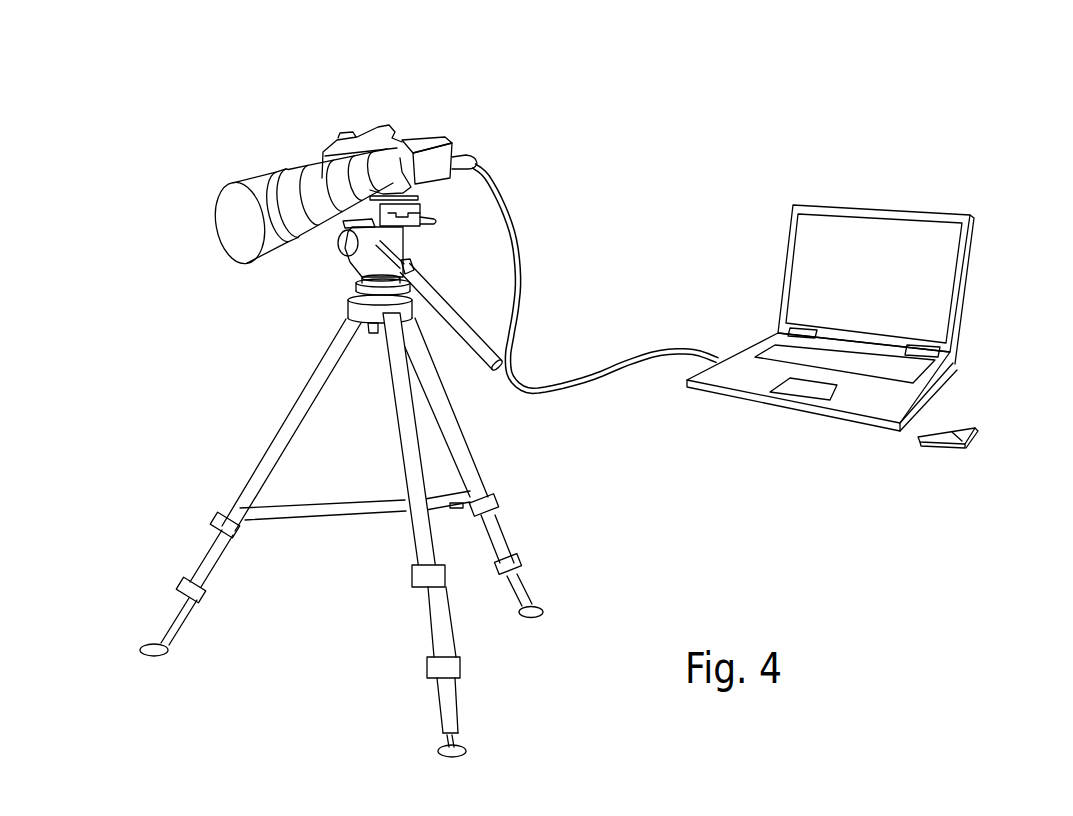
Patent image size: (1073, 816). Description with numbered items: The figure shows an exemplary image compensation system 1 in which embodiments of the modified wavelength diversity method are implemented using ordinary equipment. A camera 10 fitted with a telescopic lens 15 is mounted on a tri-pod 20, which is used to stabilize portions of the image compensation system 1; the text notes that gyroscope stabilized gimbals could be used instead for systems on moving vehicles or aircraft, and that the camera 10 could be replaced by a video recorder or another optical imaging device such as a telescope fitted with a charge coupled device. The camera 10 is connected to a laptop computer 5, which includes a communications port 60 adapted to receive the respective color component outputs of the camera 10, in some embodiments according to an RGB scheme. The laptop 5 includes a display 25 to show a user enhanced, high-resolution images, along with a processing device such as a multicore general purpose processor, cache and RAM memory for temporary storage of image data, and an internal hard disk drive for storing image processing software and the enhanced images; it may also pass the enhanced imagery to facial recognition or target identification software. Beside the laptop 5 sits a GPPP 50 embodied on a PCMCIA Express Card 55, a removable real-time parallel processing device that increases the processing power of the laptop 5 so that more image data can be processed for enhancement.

The image compensation system 1 is at (700, 104).
The laptop computer 5 is at (948, 384).
The camera 10 is at (334, 138).
The telescopic lens 15 is at (246, 178).
The tri-pod 20 is at (348, 300).
The display 25 is at (943, 290).
The GPPP 50 is at (961, 459).
The PCMCIA Express Card 55 is at (971, 445).
The communications port 60 is at (724, 360).